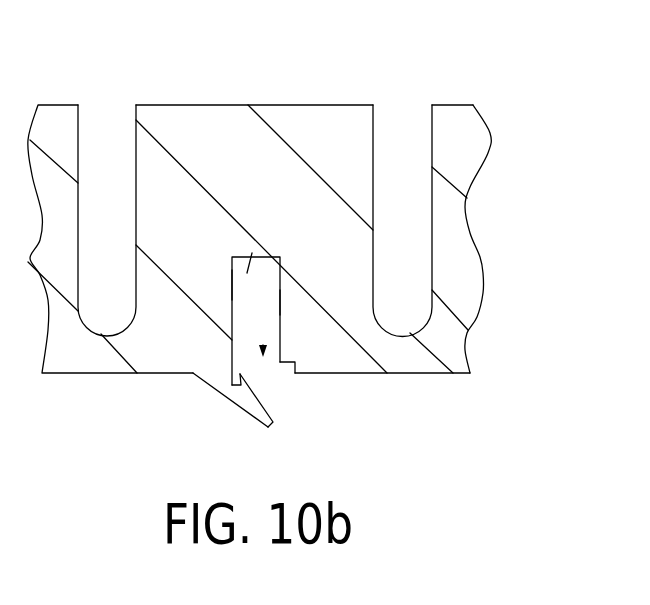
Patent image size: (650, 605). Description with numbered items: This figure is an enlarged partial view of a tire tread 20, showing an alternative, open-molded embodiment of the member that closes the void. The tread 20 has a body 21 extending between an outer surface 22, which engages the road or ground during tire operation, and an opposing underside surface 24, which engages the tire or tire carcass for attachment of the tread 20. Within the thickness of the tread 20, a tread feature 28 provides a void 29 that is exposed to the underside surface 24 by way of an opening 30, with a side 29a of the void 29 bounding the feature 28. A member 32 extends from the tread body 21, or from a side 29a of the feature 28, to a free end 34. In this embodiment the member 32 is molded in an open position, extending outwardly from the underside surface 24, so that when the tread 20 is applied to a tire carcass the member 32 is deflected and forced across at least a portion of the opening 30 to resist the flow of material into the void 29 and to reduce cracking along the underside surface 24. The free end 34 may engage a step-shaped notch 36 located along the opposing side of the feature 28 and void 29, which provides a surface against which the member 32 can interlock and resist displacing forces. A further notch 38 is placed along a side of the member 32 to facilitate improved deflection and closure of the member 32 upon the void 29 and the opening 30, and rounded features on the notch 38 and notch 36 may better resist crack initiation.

The tread 20 is at (562, 149).
The body 21 is at (470, 258).
The outer surface 22 is at (305, 105).
The underside surface 24 is at (460, 375).
The tread feature 28 is at (260, 257).
The void 29 is at (252, 253).
The side of void 29a is at (232, 287).
The opening 30 is at (263, 345).
The member 32 is at (243, 405).
The free end 34 is at (275, 426).
The notch 36 is at (292, 357).
The notch 38 is at (245, 375).